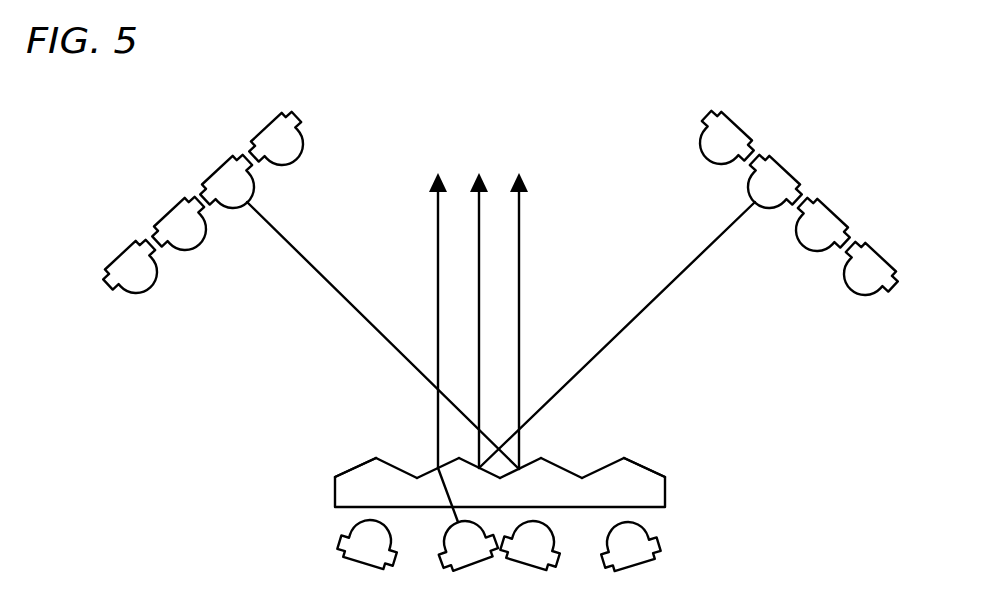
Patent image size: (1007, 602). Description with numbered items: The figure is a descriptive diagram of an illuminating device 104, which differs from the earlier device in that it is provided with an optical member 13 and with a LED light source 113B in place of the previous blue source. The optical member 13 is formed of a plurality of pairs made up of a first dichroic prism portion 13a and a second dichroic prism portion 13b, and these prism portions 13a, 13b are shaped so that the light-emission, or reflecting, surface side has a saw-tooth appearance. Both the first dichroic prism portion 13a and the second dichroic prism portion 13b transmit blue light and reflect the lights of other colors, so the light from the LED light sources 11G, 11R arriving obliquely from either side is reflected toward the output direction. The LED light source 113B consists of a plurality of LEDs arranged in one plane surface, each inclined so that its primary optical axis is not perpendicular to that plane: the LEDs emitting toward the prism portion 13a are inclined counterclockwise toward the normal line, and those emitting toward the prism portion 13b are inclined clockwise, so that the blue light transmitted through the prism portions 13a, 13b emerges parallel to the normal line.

The LED light source 11G is at (158, 179).
The LED light source 11R is at (830, 178).
The illuminating device 104 is at (870, 391).
The optical member 13 is at (528, 459).
The first dichroic prism portion 13a is at (355, 469).
The second dichroic prism portion 13b is at (396, 469).
The LED light source 113B is at (678, 539).